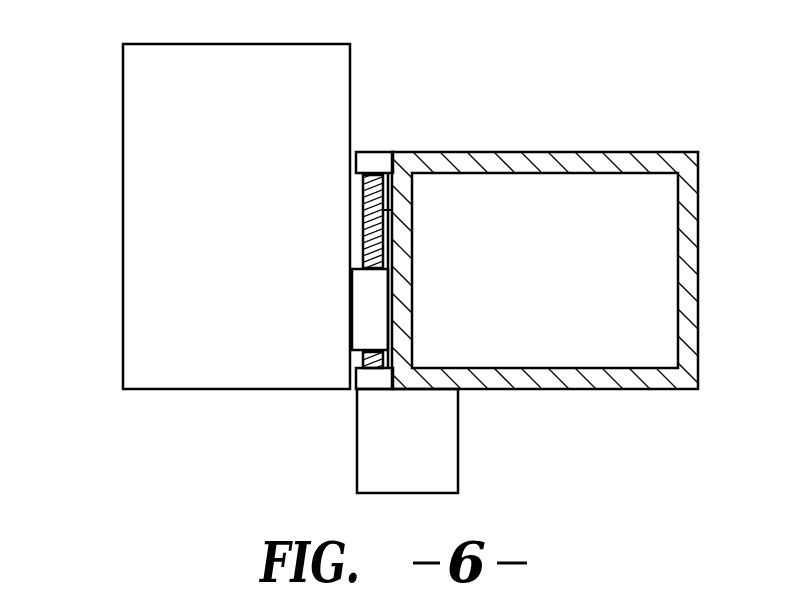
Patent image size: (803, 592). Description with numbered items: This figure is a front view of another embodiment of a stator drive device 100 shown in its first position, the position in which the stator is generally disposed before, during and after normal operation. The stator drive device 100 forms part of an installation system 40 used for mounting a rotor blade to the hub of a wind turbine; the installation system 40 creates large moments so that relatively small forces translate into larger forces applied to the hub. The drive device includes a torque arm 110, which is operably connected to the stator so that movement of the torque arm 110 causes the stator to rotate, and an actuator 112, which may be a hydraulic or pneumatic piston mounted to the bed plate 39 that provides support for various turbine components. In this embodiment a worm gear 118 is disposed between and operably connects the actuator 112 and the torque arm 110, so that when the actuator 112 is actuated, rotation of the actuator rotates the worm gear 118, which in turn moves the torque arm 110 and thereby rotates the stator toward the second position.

The stator drive device 100 is at (424, 251).
The torque arm 110 is at (123, 148).
The actuator 112 is at (458, 432).
The installation system 40 is at (473, 199).
The bed plate 39 is at (698, 207).
The worm gear 118 is at (385, 211).